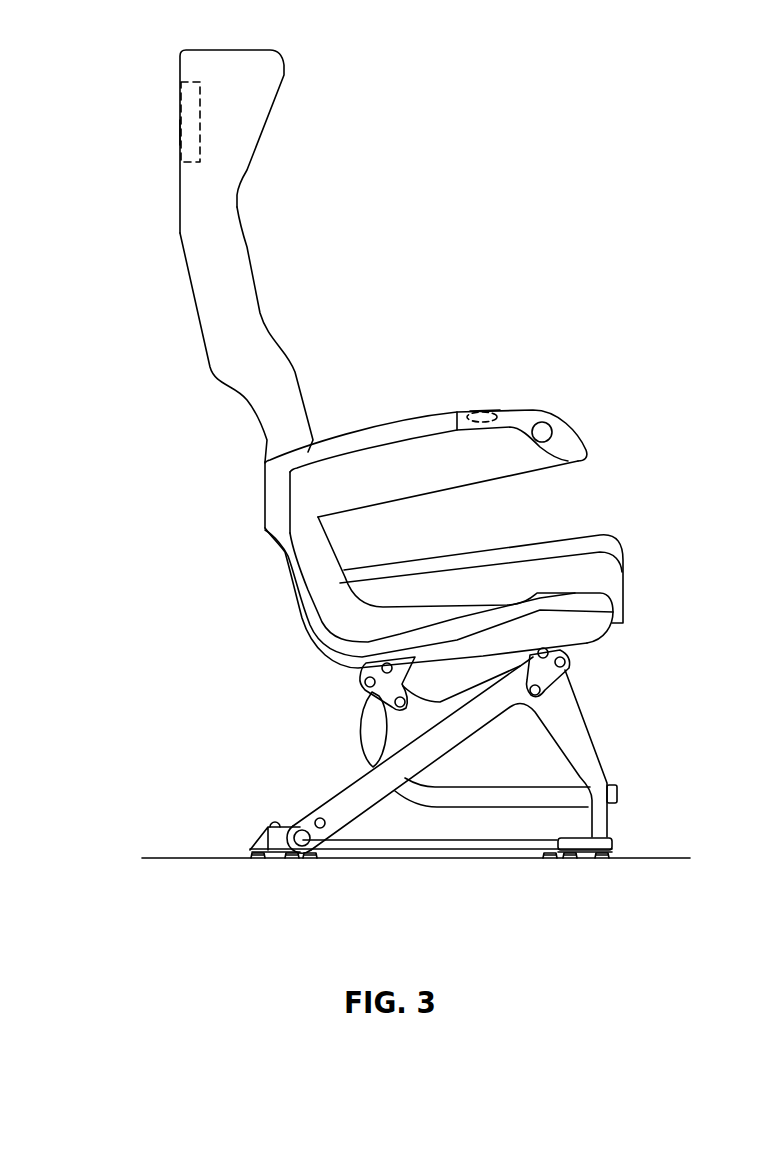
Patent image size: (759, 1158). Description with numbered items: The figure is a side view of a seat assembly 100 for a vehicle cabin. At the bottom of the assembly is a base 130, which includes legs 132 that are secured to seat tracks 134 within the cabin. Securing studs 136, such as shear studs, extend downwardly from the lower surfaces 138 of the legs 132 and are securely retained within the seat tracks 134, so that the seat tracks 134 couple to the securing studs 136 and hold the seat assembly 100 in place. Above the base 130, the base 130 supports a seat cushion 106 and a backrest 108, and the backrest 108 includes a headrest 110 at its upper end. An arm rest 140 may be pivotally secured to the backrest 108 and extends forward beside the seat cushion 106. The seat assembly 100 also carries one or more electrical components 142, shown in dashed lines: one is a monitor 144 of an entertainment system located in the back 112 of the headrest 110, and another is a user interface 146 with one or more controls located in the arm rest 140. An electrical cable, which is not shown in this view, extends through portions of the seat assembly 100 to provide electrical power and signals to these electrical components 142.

The seat assembly 100 is at (160, 52).
The seat cushion 106 is at (608, 537).
The backrest 108 is at (265, 312).
The headrest 110 is at (248, 167).
The back 112 is at (178, 190).
The base 130 is at (352, 776).
The legs 132 is at (252, 846).
The seat tracks 134 is at (330, 861).
The securing studs 136 is at (258, 861).
The lower surfaces 138 is at (270, 846).
The arm rest 140 is at (488, 410).
The electrical components 142 is at (183, 107).
The monitor 144 is at (178, 132).
The user interface 146 is at (478, 410).